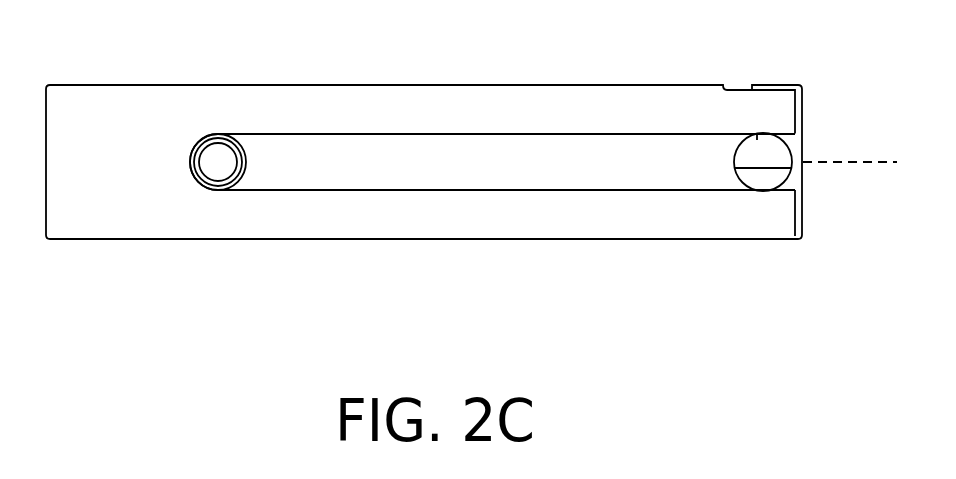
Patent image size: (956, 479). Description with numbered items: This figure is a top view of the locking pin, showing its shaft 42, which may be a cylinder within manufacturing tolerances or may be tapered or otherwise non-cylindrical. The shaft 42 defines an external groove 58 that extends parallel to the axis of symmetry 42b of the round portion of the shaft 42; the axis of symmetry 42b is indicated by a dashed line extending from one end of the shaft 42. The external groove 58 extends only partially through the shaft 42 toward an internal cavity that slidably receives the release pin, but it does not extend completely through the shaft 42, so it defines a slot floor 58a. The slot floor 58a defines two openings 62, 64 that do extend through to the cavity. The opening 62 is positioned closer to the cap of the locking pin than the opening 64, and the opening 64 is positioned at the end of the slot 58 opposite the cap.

The shaft 42 is at (265, 84).
The axis of symmetry 42b is at (857, 160).
The external groove 58 is at (460, 132).
The slot floor 58a is at (345, 151).
The opening 62 is at (735, 158).
The opening 64 is at (213, 140).